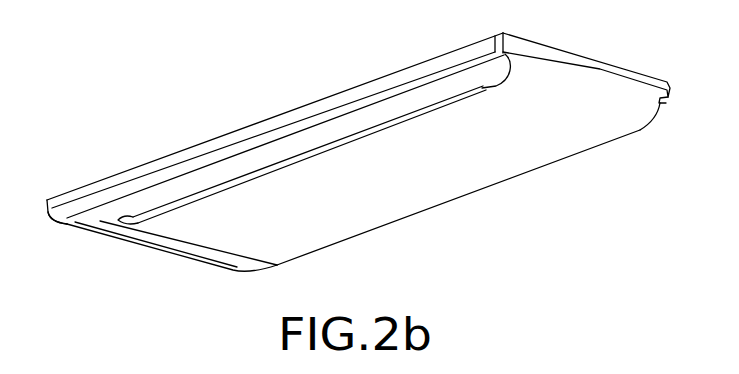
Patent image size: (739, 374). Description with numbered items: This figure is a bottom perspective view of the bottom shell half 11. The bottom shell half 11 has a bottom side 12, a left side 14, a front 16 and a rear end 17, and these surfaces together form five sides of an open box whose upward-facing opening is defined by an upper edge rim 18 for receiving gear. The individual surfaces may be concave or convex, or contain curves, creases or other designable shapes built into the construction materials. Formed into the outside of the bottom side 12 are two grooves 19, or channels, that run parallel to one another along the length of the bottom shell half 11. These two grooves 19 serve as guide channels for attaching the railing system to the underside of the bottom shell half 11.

The bottom shell half 11 is at (361, 135).
The bottom side 12 is at (380, 183).
The left side 14 is at (200, 143).
The front 16 is at (47, 205).
The rear end 17 is at (604, 62).
The upper edge rim 18 is at (396, 64).
The grooves 19 is at (345, 113).